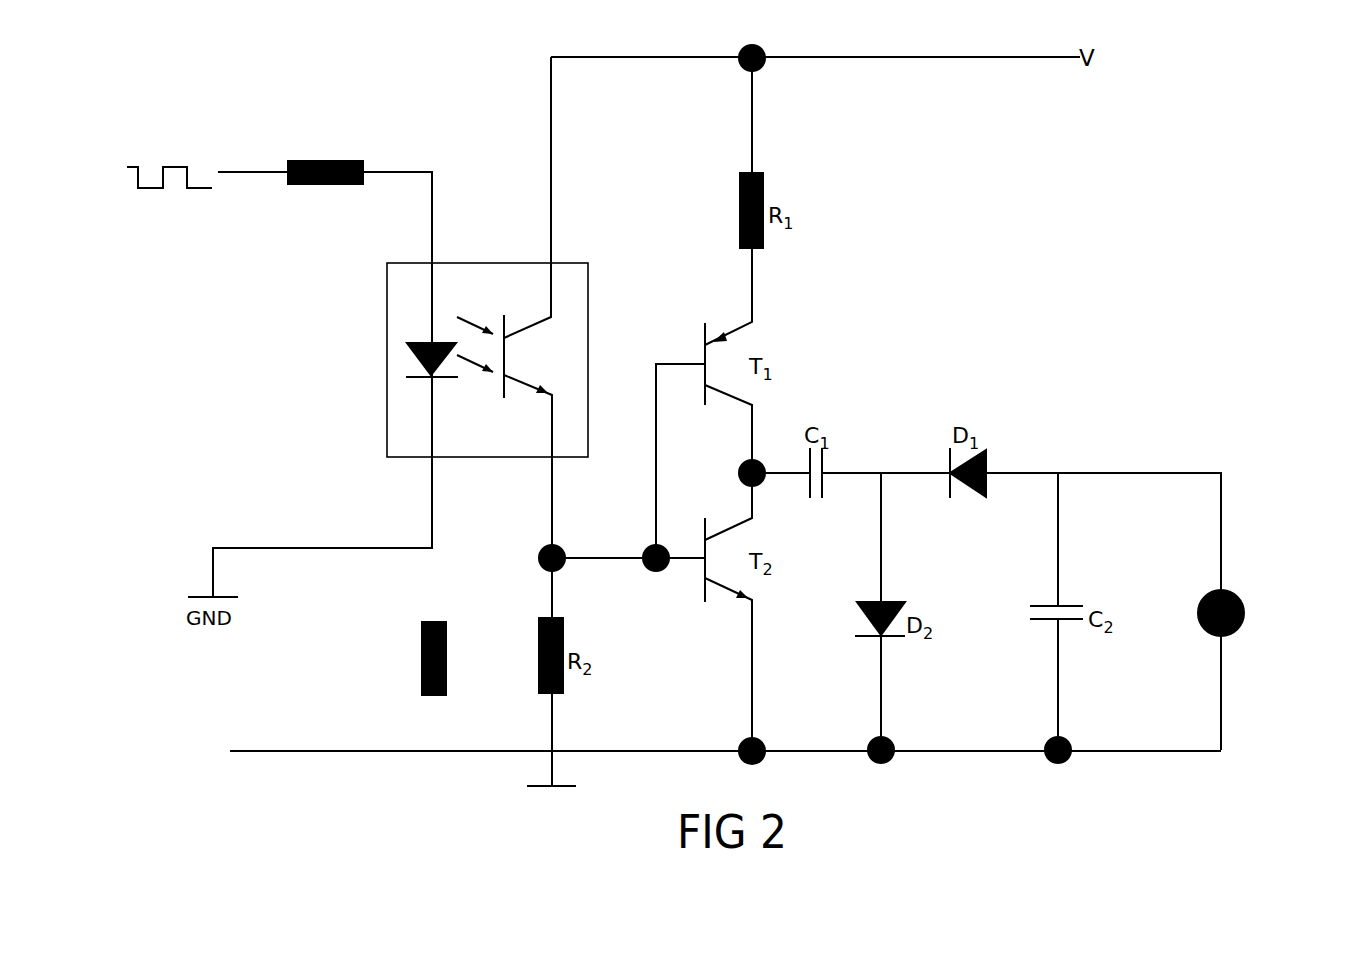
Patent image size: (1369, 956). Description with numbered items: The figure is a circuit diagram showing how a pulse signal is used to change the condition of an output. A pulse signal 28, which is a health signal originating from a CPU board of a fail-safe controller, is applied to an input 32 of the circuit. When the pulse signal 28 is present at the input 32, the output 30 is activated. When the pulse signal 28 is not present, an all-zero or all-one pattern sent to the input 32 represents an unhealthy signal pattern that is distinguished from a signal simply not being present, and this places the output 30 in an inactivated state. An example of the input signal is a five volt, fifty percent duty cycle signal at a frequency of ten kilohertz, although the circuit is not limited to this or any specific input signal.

The pulse signal 28 is at (150, 188).
The output 30 is at (1234, 592).
The input 32 is at (327, 161).